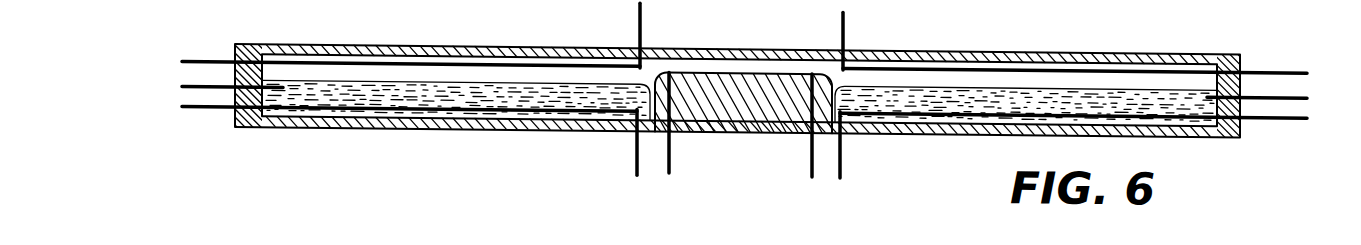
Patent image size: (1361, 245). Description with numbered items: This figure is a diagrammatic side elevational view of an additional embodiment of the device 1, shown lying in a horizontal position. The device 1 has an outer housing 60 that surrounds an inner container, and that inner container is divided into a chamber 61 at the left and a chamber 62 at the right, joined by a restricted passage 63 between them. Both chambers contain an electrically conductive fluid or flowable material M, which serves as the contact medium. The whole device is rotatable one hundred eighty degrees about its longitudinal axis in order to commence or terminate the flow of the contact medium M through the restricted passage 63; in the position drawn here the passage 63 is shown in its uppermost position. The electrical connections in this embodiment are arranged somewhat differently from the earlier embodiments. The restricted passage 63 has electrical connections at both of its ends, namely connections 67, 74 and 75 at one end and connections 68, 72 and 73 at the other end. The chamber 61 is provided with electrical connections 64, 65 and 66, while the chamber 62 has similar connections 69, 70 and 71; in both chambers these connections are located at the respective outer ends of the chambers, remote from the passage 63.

The thermometric device 1 is at (460, 180).
The outer housing 60 is at (252, 44).
The chamber 61 is at (371, 46).
The chamber 62 is at (1166, 50).
The restricted passage 63 is at (749, 58).
The electrical connection 64 is at (197, 60).
The electrical connection 65 is at (194, 84).
The electrical connection 66 is at (198, 113).
The electrical connection 67 is at (645, 14).
The electrical connection 68 is at (848, 27).
The electrical connection 69 is at (1291, 111).
The electrical connection 70 is at (1300, 89).
The electrical connection 71 is at (1292, 59).
The electrical connection 72 is at (841, 166).
The electrical connection 73 is at (810, 167).
The electrical connection 74 is at (672, 158).
The electrical connection 75 is at (634, 159).
The electrically conductive fluid or flowable material M is at (468, 94).